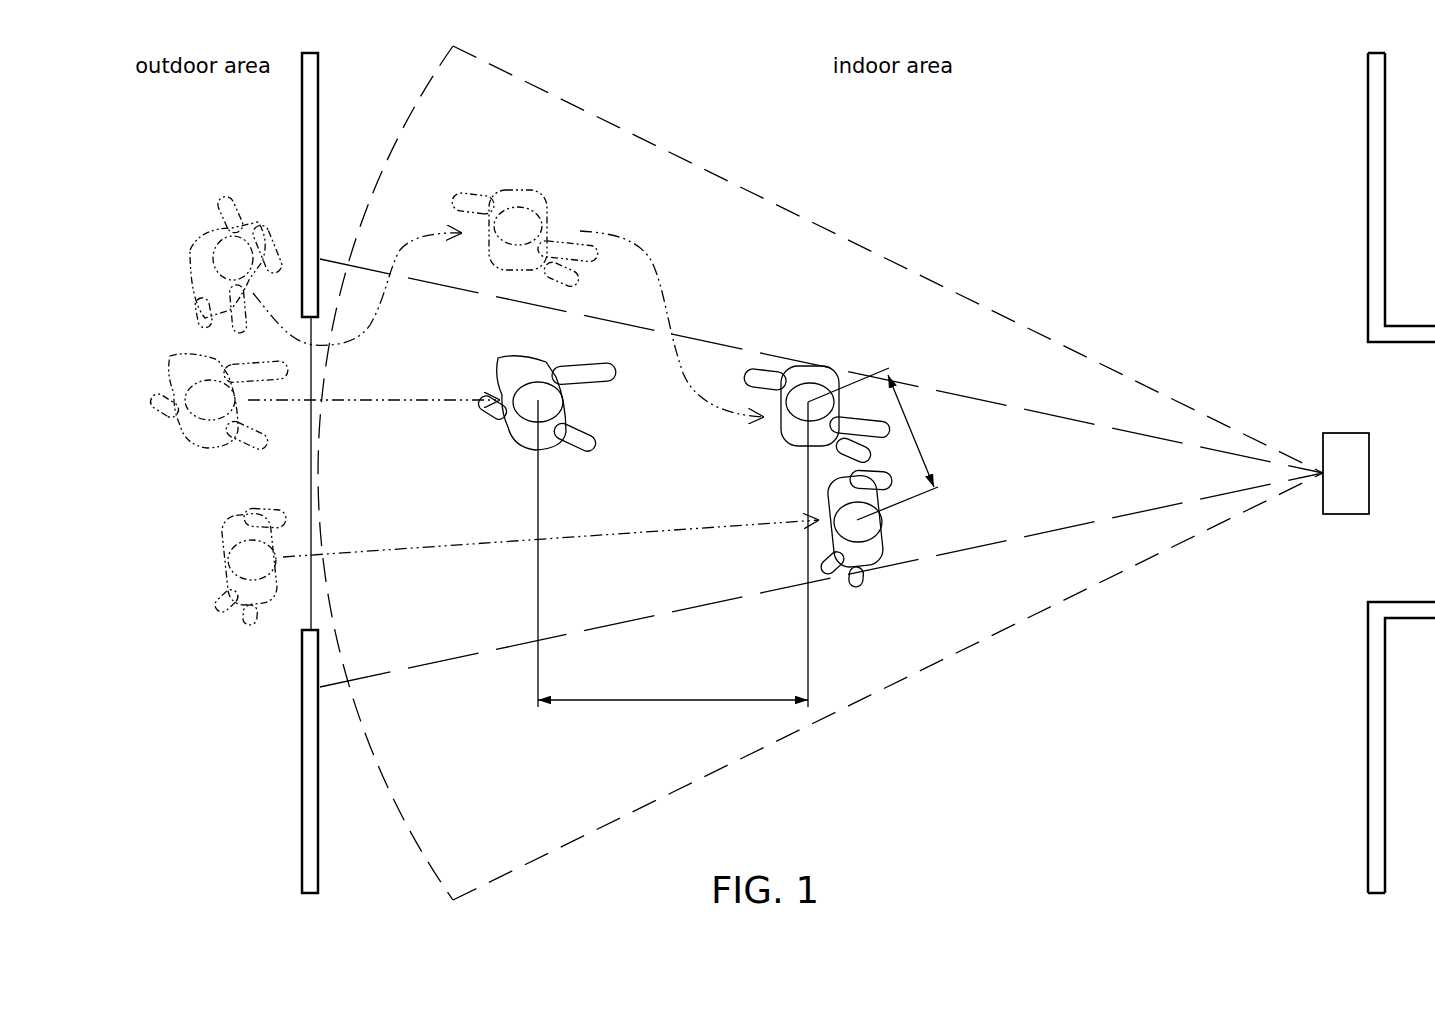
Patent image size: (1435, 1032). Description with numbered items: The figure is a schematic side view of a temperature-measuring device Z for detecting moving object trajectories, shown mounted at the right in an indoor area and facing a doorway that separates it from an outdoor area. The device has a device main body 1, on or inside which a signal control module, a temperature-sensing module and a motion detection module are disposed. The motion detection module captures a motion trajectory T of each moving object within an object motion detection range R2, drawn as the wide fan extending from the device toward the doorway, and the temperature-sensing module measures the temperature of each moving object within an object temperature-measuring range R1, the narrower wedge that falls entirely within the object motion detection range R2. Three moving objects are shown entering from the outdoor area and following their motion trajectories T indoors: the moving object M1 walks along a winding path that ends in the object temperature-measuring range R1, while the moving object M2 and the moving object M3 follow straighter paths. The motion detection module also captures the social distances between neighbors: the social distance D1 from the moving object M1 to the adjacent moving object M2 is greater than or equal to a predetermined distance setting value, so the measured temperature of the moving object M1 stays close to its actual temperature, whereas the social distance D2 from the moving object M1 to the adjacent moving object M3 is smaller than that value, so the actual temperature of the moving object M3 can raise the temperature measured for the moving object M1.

The device main body 1 is at (1348, 490).
The temperature-measuring device Z is at (1372, 446).
The object temperature-measuring range R1 is at (958, 393).
The object motion detection range R2 is at (1093, 346).
The motion trajectory T is at (655, 275).
The social distance D1 is at (673, 553).
The social distance D2 is at (874, 444).
The moving object M1 is at (515, 192).
The moving object M2 is at (566, 406).
The moving object M3 is at (883, 530).